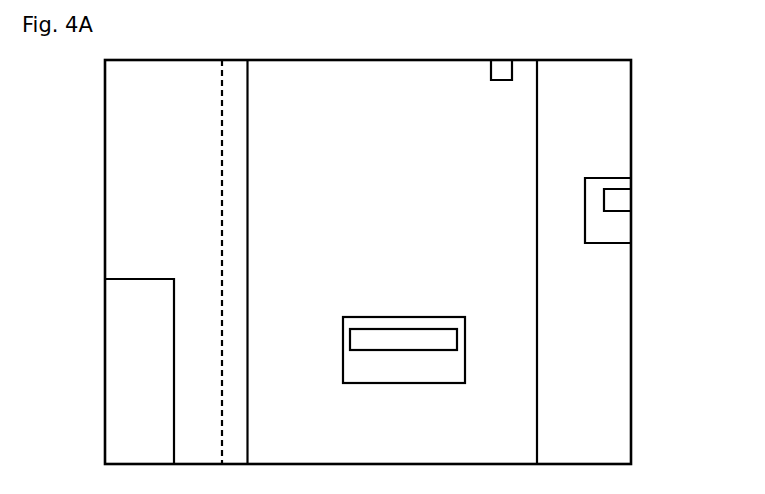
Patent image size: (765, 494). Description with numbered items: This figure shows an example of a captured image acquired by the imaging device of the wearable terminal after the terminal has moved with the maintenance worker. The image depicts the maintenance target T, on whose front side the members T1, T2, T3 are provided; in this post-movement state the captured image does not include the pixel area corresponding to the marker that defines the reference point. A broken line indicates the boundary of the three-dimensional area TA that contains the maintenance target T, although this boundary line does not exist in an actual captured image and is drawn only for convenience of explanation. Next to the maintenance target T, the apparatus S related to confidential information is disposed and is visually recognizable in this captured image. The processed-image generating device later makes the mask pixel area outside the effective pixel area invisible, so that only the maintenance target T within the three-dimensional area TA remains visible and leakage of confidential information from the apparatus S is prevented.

The maintenance target T is at (612, 130).
The three-dimensional area TA is at (227, 78).
The apparatus related to confidential information S is at (130, 340).
The member T1 is at (500, 72).
The member T2 is at (590, 211).
The member T3 is at (402, 322).